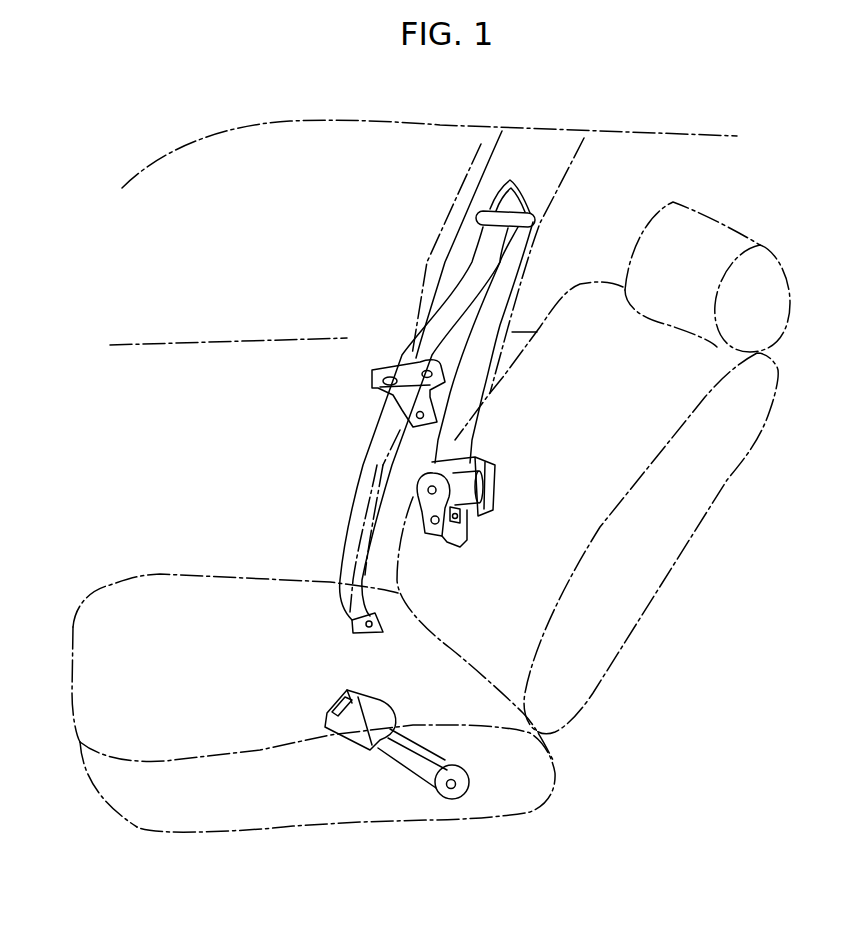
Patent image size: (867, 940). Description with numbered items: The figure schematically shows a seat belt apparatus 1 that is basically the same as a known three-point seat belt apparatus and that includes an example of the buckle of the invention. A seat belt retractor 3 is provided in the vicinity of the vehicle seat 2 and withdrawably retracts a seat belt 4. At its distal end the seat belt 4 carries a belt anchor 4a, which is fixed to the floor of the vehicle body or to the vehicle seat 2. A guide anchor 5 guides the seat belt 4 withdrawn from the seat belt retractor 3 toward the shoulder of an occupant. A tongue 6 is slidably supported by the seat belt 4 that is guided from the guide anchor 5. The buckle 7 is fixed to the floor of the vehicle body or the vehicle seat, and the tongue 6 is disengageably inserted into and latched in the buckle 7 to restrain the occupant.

The seat belt apparatus 1 is at (534, 573).
The vehicle seat 2 is at (198, 797).
The seat belt retractor 3 is at (497, 484).
The seat belt 4 is at (455, 305).
The belt anchor 4a is at (372, 637).
The guide anchor 5 is at (518, 190).
The tongue 6 is at (372, 378).
The buckle 7 is at (345, 748).